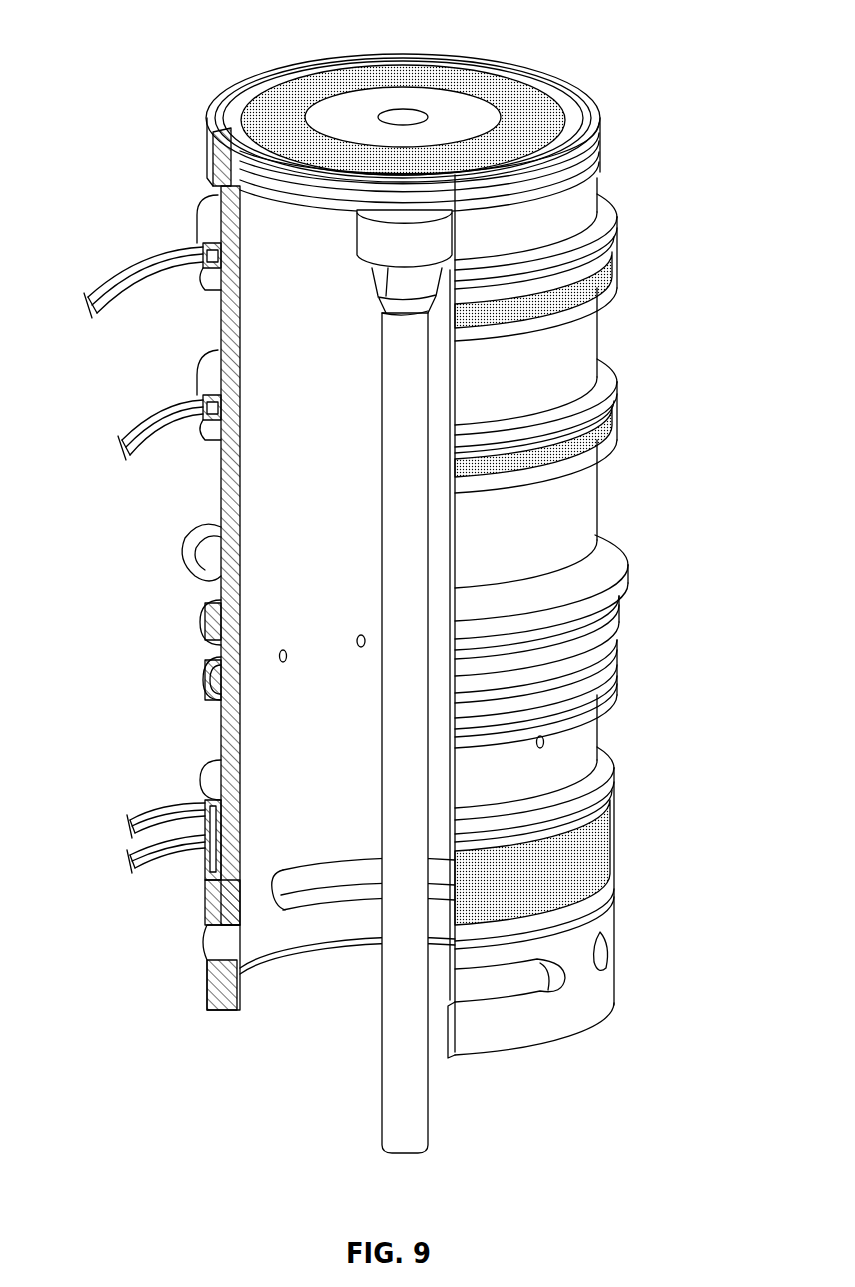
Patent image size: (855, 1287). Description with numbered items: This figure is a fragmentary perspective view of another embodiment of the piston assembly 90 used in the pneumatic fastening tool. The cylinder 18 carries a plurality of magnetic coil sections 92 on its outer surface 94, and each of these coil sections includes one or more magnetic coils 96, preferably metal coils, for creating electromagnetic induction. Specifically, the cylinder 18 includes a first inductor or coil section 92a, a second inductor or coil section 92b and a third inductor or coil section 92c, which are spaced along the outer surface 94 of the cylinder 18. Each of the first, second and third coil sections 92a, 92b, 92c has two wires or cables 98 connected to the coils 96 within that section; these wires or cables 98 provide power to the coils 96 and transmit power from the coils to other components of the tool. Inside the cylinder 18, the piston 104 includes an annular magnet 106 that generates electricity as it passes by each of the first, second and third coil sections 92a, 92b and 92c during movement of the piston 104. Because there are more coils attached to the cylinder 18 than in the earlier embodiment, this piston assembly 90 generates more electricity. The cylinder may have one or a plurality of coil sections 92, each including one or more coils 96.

The piston assembly 90 is at (404, 579).
The magnetic coil sections 92 is at (589, 616).
The first inductor or coil section 92a is at (622, 256).
The second inductor or coil section 92b is at (620, 422).
The third inductor or coil section 92c is at (612, 838).
The outer surface 94 is at (590, 337).
The magnetic coils 96 is at (605, 280).
The wires or cables 98 is at (115, 268).
The piston 104 is at (262, 222).
The annular magnet 106 is at (284, 107).
The cylinder 18 is at (198, 691).